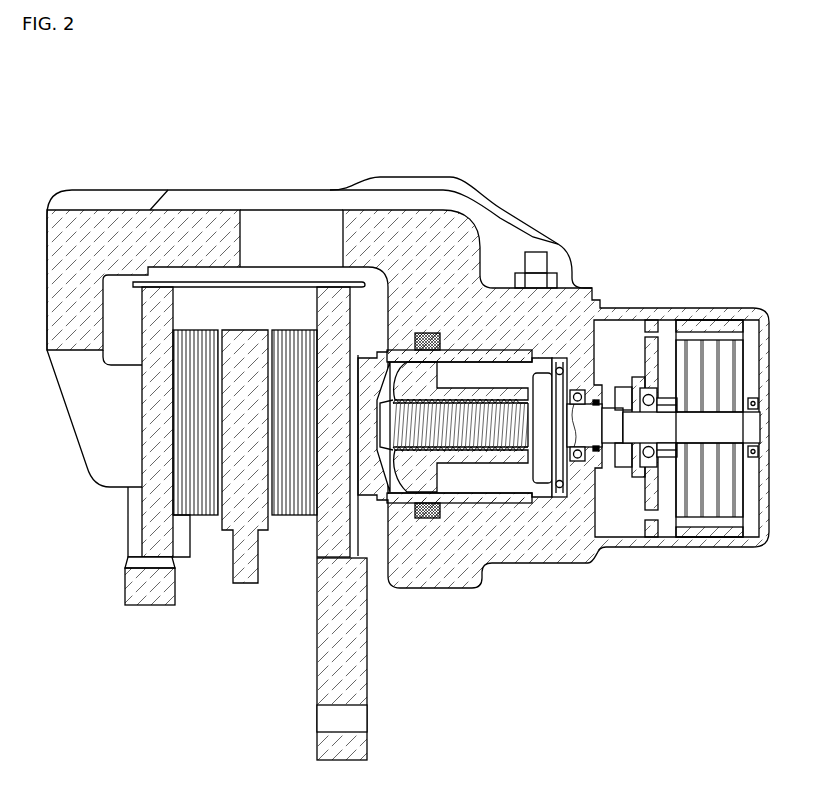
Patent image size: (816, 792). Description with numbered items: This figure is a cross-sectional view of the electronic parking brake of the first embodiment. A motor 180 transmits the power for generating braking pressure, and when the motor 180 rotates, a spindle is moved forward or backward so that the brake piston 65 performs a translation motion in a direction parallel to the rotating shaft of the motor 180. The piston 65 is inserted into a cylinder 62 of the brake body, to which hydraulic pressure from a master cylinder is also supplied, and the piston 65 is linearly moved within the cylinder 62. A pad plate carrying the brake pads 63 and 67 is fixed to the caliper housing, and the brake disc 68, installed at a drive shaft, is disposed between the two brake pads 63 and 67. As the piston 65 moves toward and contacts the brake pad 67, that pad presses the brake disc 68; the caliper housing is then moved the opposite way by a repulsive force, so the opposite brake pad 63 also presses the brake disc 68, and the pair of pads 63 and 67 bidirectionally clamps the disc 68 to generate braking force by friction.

The cylinder 62 is at (475, 376).
The brake pad 63 is at (197, 342).
The brake pad 67 is at (290, 343).
The piston 65 is at (397, 512).
The brake disc 68 is at (243, 583).
The motor 180 is at (697, 295).